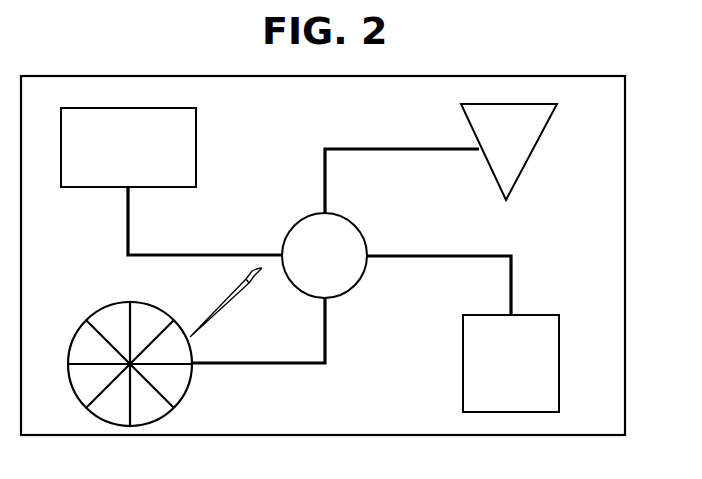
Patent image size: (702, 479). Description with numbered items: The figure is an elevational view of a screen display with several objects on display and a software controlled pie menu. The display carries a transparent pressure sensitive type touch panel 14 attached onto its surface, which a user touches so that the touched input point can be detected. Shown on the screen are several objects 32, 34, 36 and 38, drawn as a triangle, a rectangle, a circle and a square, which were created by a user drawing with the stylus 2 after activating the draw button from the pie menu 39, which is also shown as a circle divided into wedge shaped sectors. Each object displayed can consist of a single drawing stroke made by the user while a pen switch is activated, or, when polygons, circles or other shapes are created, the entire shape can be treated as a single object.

The touch panel 14 is at (625, 183).
The object 34 is at (197, 140).
The object 32 is at (531, 141).
The object 36 is at (357, 227).
The object 38 is at (560, 344).
The pie menu 39 is at (98, 311).
The stylus 2 is at (232, 302).